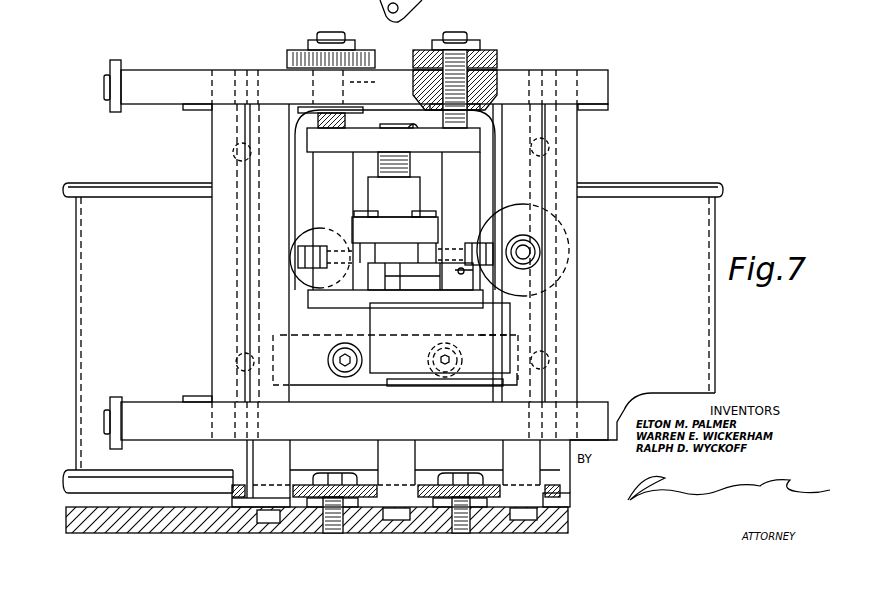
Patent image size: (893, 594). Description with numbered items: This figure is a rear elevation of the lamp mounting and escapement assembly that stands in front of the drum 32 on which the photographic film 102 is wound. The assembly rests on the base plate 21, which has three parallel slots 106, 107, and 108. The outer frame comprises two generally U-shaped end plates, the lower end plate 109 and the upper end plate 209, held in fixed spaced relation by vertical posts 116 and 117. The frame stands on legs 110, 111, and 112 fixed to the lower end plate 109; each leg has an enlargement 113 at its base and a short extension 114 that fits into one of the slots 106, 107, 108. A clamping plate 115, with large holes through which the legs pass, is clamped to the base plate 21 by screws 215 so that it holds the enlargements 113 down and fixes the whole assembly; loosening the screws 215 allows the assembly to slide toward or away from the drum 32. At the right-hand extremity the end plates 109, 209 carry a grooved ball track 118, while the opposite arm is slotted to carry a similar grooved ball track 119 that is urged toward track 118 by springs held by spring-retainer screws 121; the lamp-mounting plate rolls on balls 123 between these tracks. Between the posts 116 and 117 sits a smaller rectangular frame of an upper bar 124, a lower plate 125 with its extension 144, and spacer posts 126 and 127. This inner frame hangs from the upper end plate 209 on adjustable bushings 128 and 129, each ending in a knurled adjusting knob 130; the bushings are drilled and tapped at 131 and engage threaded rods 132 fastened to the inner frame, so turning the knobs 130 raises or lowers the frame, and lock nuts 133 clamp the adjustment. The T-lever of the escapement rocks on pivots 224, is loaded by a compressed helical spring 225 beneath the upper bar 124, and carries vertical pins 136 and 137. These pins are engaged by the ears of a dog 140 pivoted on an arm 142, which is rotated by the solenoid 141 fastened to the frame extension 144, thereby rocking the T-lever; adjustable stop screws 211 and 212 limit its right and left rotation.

The base plate 21 is at (122, 512).
The drum 32 is at (138, 183).
The photographic film 102 is at (146, 321).
The slot 106 is at (258, 519).
The center slot 107 is at (402, 522).
The slot 108 is at (522, 525).
The lower end plate 109 is at (592, 415).
The leg 110 is at (382, 447).
The leg 111 is at (256, 447).
The leg 112 is at (508, 447).
The enlargement 113 is at (236, 503).
The short extension 114 is at (280, 487).
The clamping plate 115 is at (245, 485).
The vertical post 116 is at (528, 202).
The vertical post 117 is at (253, 235).
The grooved ball track 118 is at (578, 284).
The grooved ball track 119 is at (212, 222).
The spring-retainer screw 121 is at (108, 90).
The ball 123 is at (233, 152).
The upper bar 124 is at (320, 148).
The lower plate 125 is at (300, 302).
The spacer post 126 is at (470, 182).
The spacer post 127 is at (318, 194).
The adjustable bushing 128 is at (352, 82).
The adjustable bushing 129 is at (482, 87).
The knurled adjusting knob 130 is at (372, 56).
The drilled and tapped portion 131 is at (412, 92).
The threaded rod 132 is at (435, 114).
The lock nut 133 is at (440, 33).
The vertical pin 136 is at (357, 217).
The vertical pin 137 is at (426, 217).
The dog 140 is at (378, 217).
The solenoid 141 is at (517, 318).
The arm 142 is at (440, 295).
The frame extension 144 is at (400, 297).
The upper end plate 209 is at (610, 92).
The adjustable stop screw 211 is at (302, 248).
The adjustable stop screw 212 is at (492, 248).
The screw 215 is at (334, 476).
The pivot 224 is at (410, 130).
The compressed helical spring 225 is at (412, 166).